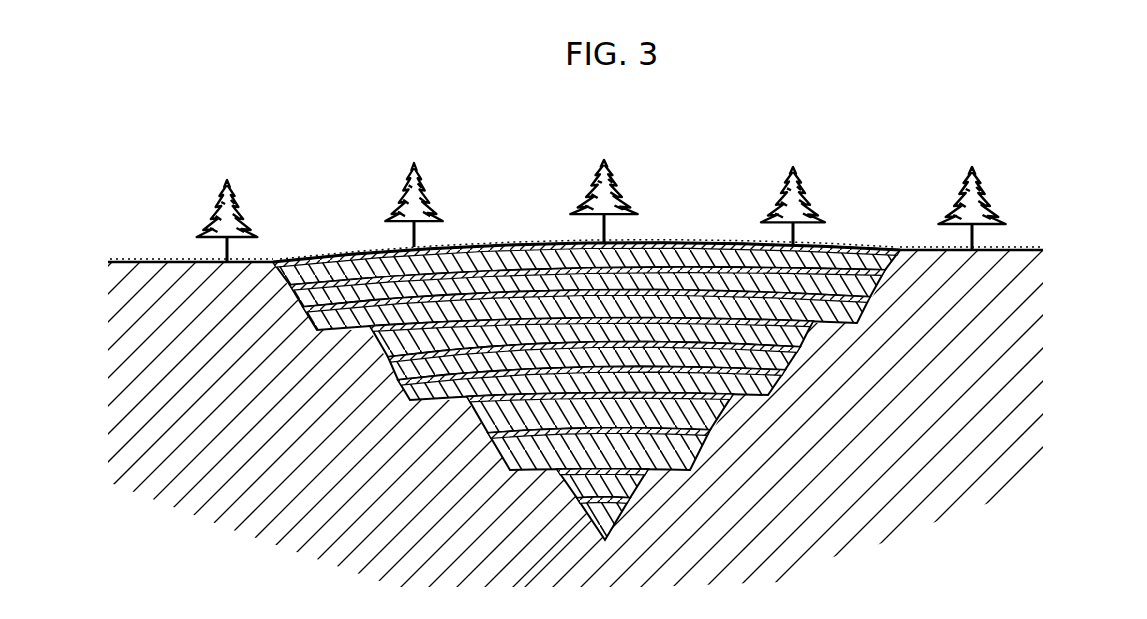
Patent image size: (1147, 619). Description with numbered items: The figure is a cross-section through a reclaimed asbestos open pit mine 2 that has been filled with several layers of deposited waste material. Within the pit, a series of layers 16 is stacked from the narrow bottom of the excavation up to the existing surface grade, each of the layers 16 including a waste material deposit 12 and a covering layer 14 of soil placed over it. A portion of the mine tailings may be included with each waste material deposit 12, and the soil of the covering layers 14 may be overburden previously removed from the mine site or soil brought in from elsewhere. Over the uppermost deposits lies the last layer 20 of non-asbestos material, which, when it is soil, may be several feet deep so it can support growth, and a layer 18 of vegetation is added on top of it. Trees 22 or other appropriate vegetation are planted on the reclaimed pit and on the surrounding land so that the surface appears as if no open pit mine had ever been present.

The open pit mine 2 is at (577, 367).
The waste material deposits 12 is at (614, 526).
The covering layers 14 is at (614, 499).
The layers 16 is at (598, 548).
The layer of vegetation 18 is at (263, 260).
The last layer of non-asbestos material 20 is at (673, 246).
The trees 22 is at (440, 206).